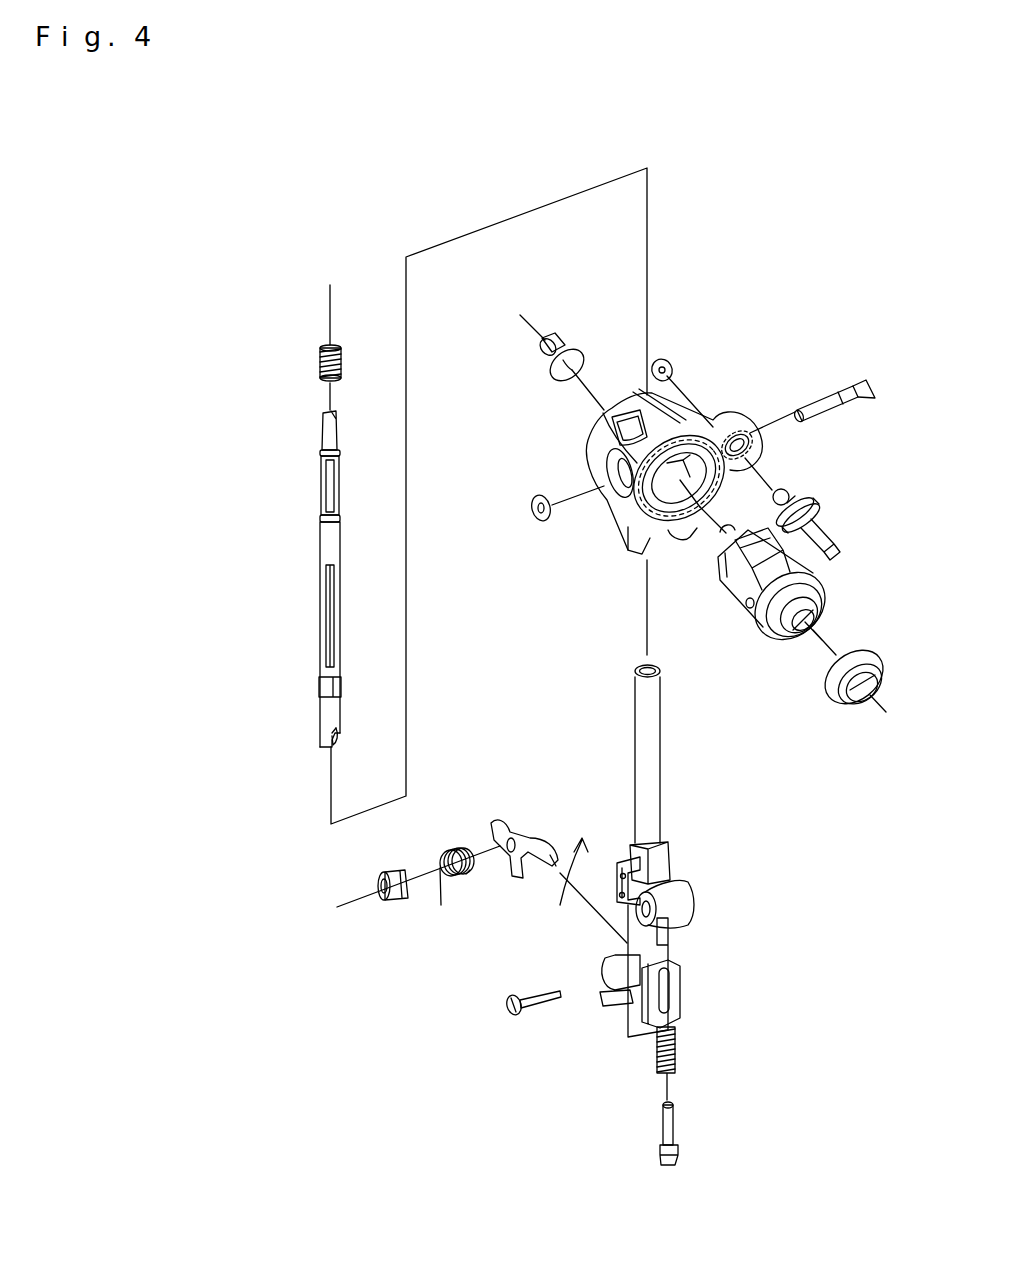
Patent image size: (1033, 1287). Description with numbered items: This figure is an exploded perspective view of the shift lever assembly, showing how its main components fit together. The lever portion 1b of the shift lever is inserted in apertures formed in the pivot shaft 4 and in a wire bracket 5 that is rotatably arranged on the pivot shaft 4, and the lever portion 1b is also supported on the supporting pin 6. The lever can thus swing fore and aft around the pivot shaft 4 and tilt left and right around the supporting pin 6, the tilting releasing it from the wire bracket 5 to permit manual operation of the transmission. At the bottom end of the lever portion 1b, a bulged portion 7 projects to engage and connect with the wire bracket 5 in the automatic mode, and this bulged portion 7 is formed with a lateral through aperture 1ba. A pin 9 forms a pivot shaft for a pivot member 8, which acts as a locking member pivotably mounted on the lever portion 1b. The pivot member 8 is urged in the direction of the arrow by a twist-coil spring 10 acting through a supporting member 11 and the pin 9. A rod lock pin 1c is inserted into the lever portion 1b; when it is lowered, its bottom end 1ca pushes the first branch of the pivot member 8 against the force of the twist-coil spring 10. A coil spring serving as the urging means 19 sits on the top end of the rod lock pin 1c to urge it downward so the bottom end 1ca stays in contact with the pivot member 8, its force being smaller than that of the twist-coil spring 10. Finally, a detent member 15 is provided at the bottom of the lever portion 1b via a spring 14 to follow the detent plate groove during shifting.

The lever portion 1b is at (672, 835).
The lateral through aperture 1ba is at (664, 985).
The rod lock pin 1c is at (340, 540).
The bottom end 1ca is at (335, 746).
The pivot shaft 4 is at (762, 638).
The wire bracket 5 is at (596, 440).
The supporting pin 6 is at (860, 405).
The bulged portion 7 is at (685, 990).
The pivot member 8 is at (520, 825).
The pin 9 is at (540, 1008).
The twist-coil spring 10 is at (467, 878).
The supporting member 11 is at (398, 903).
The spring 14 is at (677, 1040).
The detent member 15 is at (676, 1137).
The urging means 19 is at (318, 358).